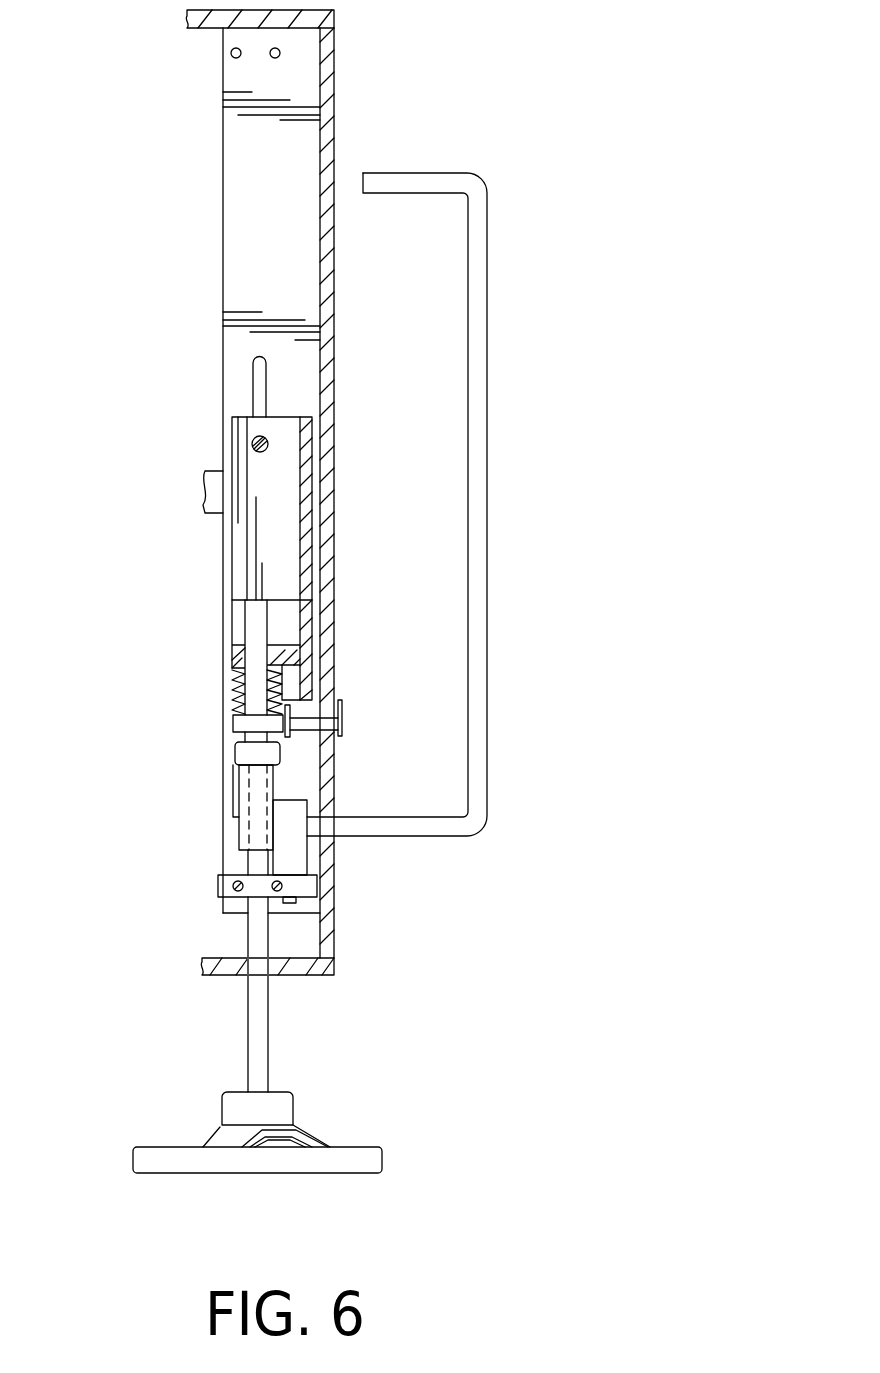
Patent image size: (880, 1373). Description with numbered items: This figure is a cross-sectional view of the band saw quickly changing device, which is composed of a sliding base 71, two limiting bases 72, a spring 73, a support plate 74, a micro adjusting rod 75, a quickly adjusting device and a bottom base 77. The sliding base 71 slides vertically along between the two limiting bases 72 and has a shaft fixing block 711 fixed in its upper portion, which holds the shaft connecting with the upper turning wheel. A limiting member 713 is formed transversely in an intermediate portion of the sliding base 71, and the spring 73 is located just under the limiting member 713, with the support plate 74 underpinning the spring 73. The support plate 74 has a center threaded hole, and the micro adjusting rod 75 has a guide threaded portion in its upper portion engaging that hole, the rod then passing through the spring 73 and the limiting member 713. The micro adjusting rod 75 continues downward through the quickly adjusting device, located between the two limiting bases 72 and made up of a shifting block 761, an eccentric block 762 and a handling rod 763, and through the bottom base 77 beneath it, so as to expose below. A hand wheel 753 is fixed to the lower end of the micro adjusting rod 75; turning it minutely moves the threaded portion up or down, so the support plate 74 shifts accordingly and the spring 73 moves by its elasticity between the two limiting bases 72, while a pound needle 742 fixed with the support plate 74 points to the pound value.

The sliding base 71 is at (317, 622).
The limiting base 72 is at (253, 253).
The shaft fixing block 711 is at (245, 545).
The limiting member 713 is at (237, 643).
The spring 73 is at (237, 688).
The support plate 74 is at (240, 723).
The pound needle 742 is at (340, 718).
The shifting block 761 is at (250, 807).
The eccentric block 762 is at (290, 852).
The handling rod 763 is at (482, 437).
The bottom base 77 is at (240, 873).
The micro adjusting rod 75 is at (263, 1047).
The hand wheel 753 is at (357, 1162).